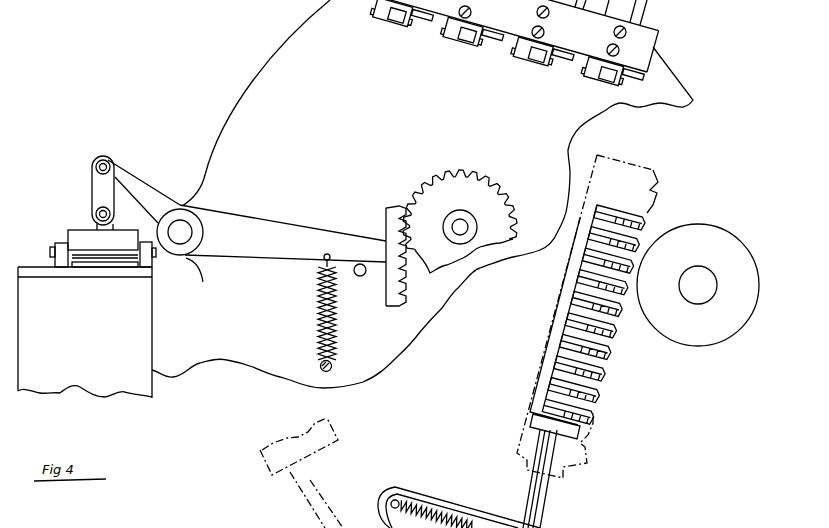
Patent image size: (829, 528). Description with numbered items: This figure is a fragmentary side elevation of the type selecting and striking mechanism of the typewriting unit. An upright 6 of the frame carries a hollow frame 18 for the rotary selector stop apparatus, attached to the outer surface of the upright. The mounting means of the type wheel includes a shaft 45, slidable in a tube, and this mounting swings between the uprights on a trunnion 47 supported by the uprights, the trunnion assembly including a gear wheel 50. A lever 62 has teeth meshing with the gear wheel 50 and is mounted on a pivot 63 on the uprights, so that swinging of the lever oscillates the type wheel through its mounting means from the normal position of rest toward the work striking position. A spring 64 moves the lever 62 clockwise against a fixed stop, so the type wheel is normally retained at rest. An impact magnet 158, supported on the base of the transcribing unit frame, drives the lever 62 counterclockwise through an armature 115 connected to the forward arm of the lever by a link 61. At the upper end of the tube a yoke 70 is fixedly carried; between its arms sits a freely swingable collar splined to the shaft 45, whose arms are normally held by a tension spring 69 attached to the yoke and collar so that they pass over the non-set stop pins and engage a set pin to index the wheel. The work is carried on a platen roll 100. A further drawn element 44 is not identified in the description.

The upright 6 is at (677, 90).
The hollow frame 18 is at (655, 47).
The rack 44 is at (620, 353).
The shaft 45 is at (546, 512).
The trunnion 47 is at (452, 227).
The gear wheel 50 is at (490, 192).
The link 61 is at (100, 178).
The lever 62 is at (285, 252).
The pivot 63 is at (183, 232).
The spring 64 is at (318, 322).
The tension spring 69 is at (457, 518).
The yoke 70 is at (387, 490).
The platen roll 100 is at (737, 247).
The armature 115 is at (72, 235).
The impact magnet 158 is at (80, 386).